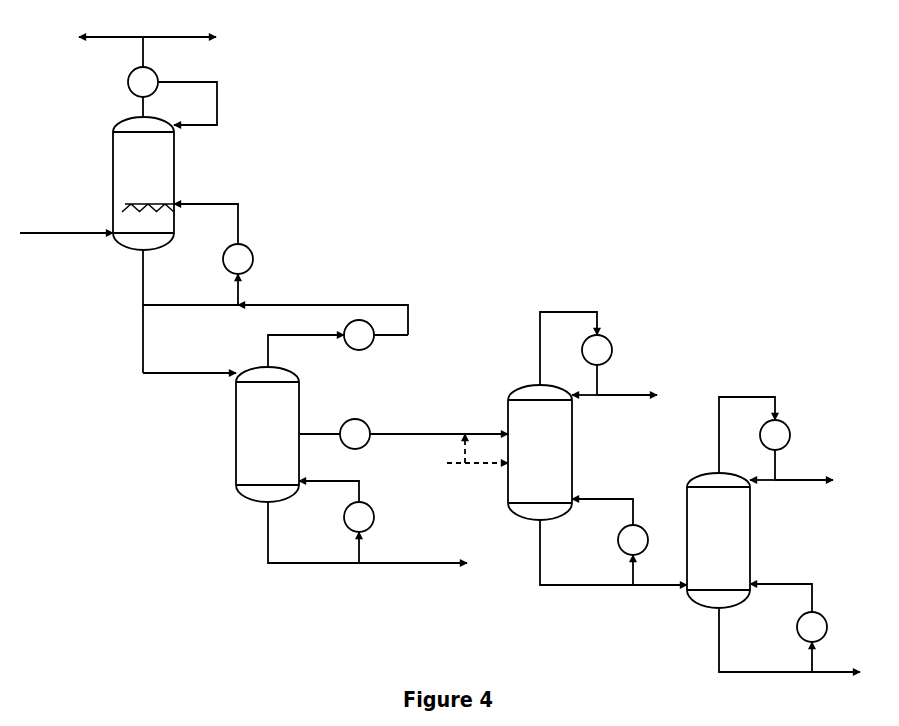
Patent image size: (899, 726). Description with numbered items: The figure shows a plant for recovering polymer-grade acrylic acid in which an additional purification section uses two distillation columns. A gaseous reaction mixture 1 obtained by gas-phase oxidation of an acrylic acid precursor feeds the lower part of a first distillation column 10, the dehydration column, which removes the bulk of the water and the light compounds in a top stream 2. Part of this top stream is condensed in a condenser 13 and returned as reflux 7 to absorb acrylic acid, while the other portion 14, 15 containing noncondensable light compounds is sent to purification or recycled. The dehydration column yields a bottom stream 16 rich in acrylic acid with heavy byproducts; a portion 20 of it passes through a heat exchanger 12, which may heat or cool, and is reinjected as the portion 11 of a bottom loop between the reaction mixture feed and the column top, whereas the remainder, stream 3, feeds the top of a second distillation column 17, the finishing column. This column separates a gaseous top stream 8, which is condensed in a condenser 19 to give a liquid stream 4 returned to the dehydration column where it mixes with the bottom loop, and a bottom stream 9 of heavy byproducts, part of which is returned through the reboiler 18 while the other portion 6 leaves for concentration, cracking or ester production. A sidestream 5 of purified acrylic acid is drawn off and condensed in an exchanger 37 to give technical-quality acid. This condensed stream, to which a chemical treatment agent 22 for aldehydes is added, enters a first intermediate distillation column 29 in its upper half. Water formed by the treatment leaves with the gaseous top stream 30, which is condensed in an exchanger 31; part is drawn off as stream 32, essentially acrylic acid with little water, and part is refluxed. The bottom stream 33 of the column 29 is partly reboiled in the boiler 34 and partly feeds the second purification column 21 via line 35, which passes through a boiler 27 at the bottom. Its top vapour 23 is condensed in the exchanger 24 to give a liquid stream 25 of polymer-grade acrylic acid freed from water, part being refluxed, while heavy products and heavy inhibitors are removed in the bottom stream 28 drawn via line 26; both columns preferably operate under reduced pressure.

The gaseous reaction mixture 1 is at (66, 218).
The top stream 2 is at (132, 105).
The stream 3 is at (189, 361).
The liquid stream 4 is at (323, 308).
The sidestream 5 is at (403, 420).
The other portion 6 is at (413, 550).
The reflux 7 is at (200, 103).
The top stream 8 is at (306, 351).
The bottom stream 9 is at (297, 532).
The first distillation column 10 is at (143, 183).
The portion of the bottom loop 11 is at (219, 223).
The heat exchanger 12 is at (238, 274).
The condenser 13 is at (143, 67).
The other portion 14 is at (111, 23).
The other portion 15 is at (179, 23).
The bottom stream 16 is at (124, 311).
The second distillation column 17 is at (267, 434).
The reboiler 18 is at (336, 522).
The condenser 19 is at (376, 335).
The portion of the bottom liquid stream 20 is at (190, 291).
The purification column 21 is at (718, 540).
The chemical treatment agent 22 is at (462, 453).
The overhead vapor stream of column 21 23 is at (731, 435).
The exchanger 24 is at (775, 450).
The liquid stream 25 is at (791, 494).
The bottoms stream of column 21 26 is at (747, 640).
The boiler 27 is at (788, 628).
The bottom stream 28 is at (837, 658).
The first intermediate distillation column 29 is at (540, 452).
The gaseous top stream 30 is at (554, 348).
The exchanger 31 is at (597, 365).
The stream 32 is at (614, 410).
The stream 33 is at (569, 552).
The boiler 34 is at (610, 542).
The feed stream to column 21 35 is at (660, 571).
The exchanger 37 is at (355, 434).